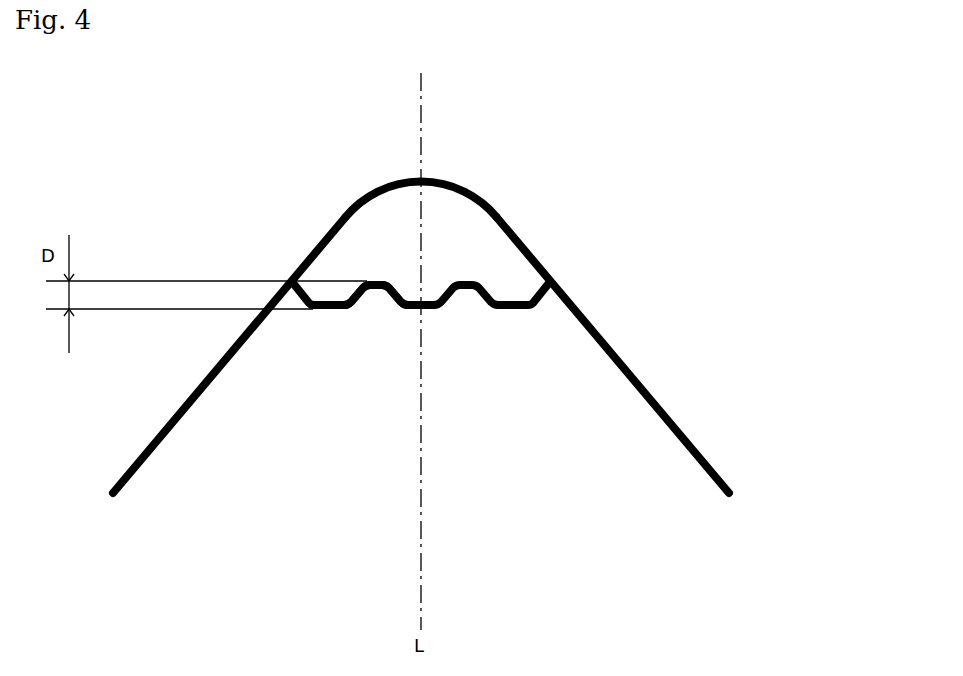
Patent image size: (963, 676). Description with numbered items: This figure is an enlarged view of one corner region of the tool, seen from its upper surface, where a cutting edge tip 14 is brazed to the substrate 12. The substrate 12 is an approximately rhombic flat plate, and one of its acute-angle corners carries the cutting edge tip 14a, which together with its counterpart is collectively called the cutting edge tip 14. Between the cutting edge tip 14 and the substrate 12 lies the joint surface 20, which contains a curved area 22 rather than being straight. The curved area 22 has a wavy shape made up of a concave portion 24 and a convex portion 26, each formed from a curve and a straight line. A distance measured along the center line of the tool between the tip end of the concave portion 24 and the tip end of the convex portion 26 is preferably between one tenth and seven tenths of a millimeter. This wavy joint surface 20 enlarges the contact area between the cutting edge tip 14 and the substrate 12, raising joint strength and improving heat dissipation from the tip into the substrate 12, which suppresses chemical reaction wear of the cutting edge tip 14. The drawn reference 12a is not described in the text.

The substrate 12 is at (510, 355).
The inclined side wall of base plate 12a is at (617, 420).
The cutting edge tip 14 is at (500, 190).
The cutting edge tip 14a is at (421, 199).
The joint surface 20 is at (472, 454).
The curved area 22 is at (432, 313).
The concave portion 24 is at (377, 282).
The convex portion 26 is at (328, 310).